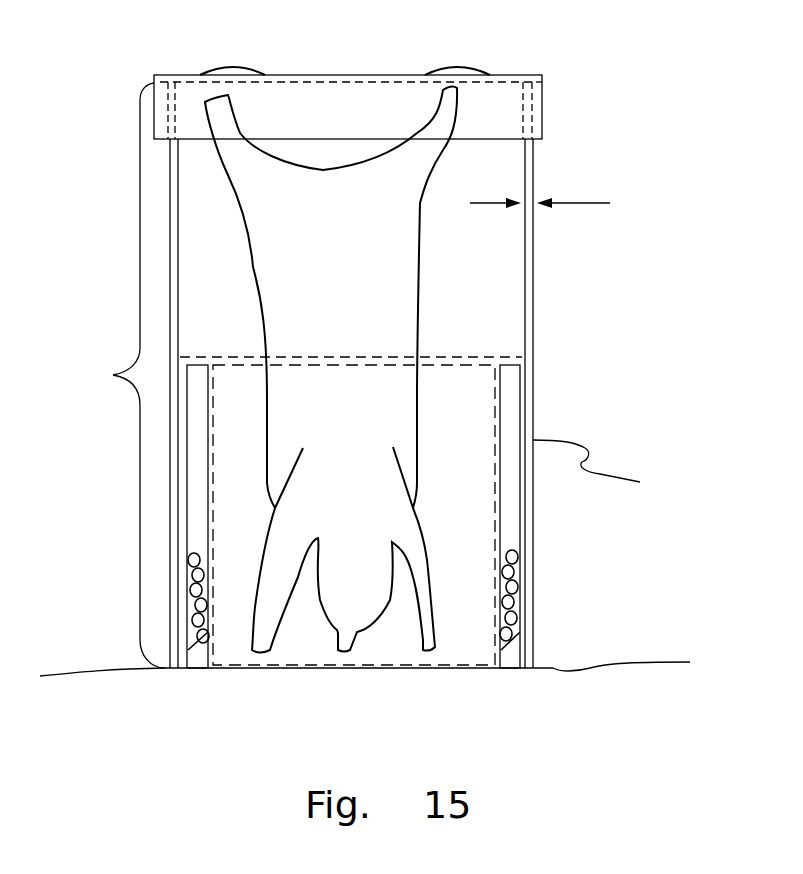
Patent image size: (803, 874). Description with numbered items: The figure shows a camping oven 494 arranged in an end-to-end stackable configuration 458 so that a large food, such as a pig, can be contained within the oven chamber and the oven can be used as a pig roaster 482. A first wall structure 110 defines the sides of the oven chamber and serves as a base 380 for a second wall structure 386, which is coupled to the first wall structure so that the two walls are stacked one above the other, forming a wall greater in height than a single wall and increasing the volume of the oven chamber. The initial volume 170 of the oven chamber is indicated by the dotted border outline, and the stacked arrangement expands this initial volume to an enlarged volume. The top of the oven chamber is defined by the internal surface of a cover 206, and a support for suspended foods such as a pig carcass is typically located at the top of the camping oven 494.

The cover 206 is at (505, 73).
The camping oven 494 is at (604, 106).
The end-to-end stackable configuration 458 is at (102, 375).
The second wall structure 386 is at (533, 333).
The base 380 is at (540, 362).
The initial volume 170 is at (486, 374).
The pig roaster 482 is at (600, 557).
The wall structure 110 is at (374, 558).